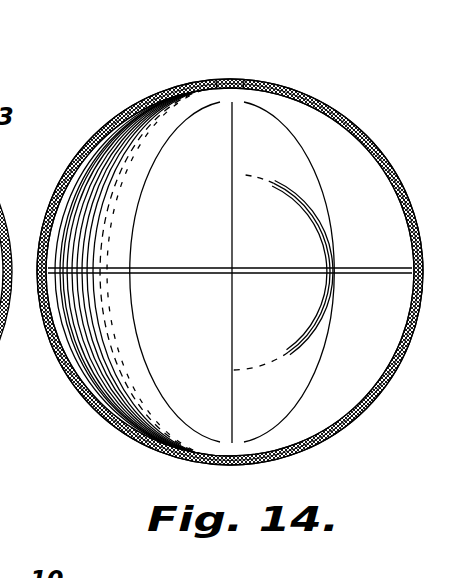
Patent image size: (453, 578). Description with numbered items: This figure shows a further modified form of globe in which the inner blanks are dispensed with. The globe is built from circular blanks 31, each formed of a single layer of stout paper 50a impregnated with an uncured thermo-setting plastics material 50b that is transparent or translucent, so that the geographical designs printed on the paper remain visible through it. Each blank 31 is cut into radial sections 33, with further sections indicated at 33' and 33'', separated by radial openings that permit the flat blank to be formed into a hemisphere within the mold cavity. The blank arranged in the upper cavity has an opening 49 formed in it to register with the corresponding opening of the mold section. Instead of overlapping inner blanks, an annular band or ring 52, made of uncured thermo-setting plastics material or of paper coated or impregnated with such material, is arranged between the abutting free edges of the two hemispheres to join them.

The blank 31 is at (113, 115).
The radial section 33 is at (215, 272).
The meridian section 33' is at (180, 272).
The inner section arcs 33'' is at (282, 272).
The opening 49 is at (243, 75).
The annular band or ring 52 is at (42, 266).
The paper 50a is at (83, 382).
The thermo-setting plastics material 50b is at (83, 388).